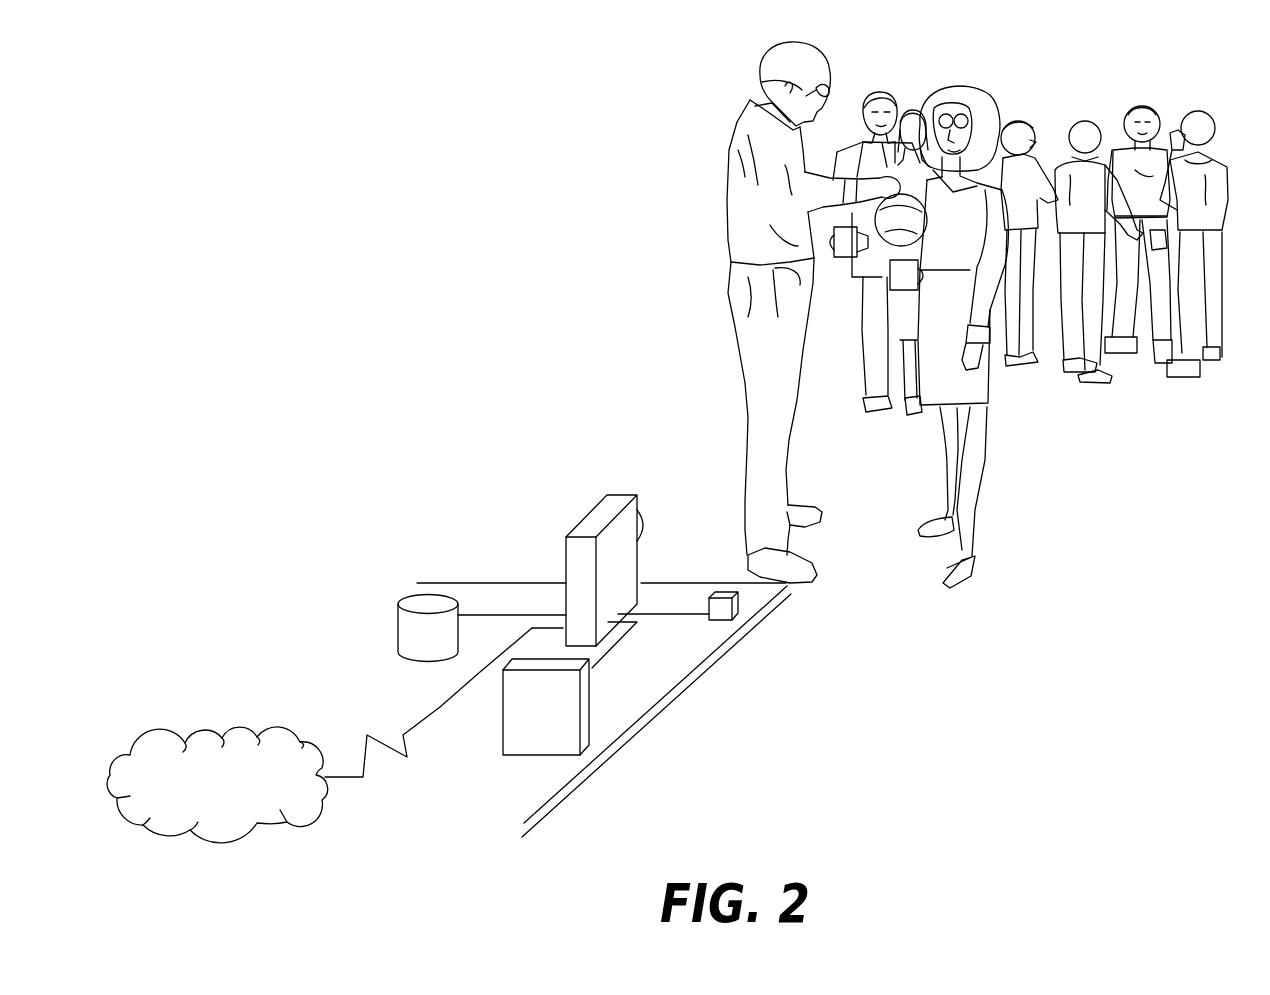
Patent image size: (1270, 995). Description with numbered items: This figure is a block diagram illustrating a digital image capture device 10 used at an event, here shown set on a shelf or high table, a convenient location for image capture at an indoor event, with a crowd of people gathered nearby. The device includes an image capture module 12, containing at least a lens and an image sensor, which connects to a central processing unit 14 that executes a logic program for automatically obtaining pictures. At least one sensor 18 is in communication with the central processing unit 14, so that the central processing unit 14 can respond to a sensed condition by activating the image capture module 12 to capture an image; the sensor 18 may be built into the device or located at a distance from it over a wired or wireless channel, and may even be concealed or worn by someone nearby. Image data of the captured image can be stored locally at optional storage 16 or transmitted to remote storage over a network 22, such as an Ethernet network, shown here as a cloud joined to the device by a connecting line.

The digital image capture device 10 is at (350, 380).
The image capture module 12 is at (592, 507).
The central processing unit 14 is at (582, 711).
The storage 16 is at (400, 623).
The sensor 18 is at (738, 608).
The network 22 is at (225, 738).